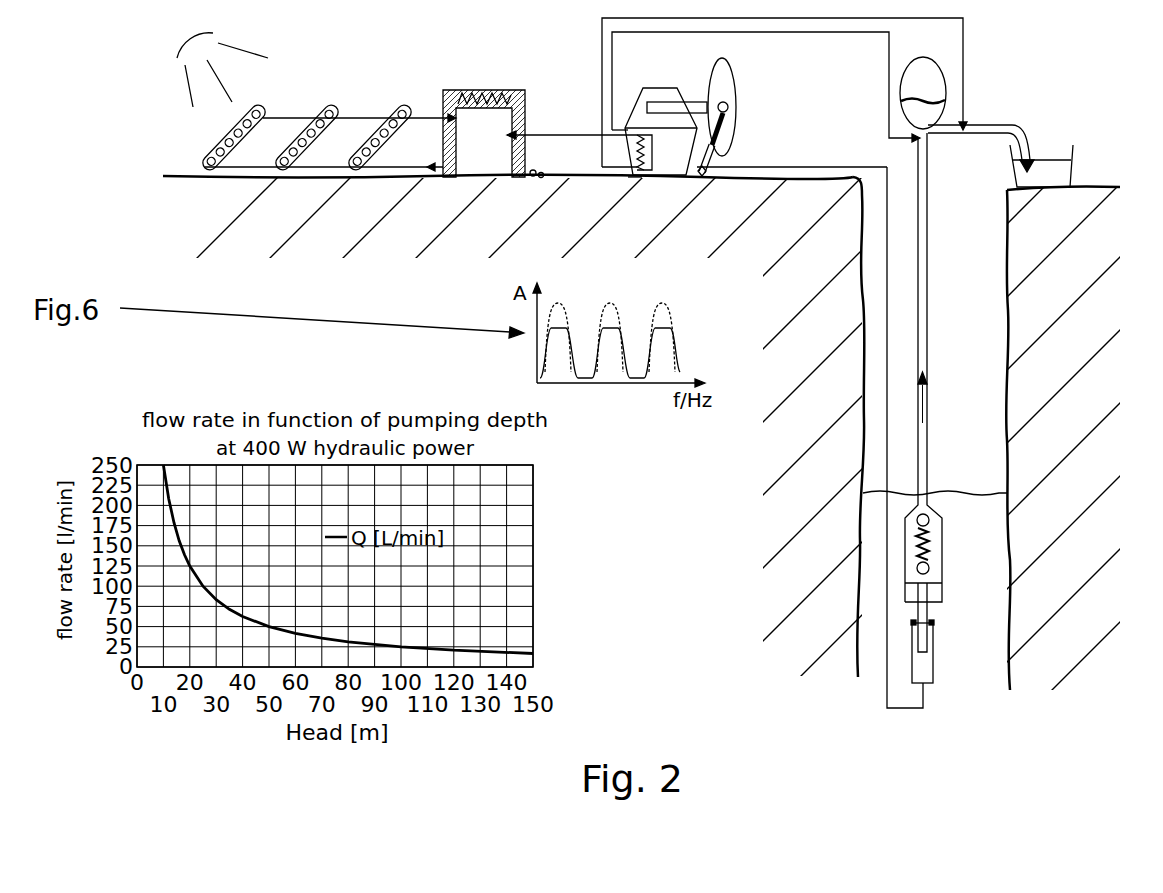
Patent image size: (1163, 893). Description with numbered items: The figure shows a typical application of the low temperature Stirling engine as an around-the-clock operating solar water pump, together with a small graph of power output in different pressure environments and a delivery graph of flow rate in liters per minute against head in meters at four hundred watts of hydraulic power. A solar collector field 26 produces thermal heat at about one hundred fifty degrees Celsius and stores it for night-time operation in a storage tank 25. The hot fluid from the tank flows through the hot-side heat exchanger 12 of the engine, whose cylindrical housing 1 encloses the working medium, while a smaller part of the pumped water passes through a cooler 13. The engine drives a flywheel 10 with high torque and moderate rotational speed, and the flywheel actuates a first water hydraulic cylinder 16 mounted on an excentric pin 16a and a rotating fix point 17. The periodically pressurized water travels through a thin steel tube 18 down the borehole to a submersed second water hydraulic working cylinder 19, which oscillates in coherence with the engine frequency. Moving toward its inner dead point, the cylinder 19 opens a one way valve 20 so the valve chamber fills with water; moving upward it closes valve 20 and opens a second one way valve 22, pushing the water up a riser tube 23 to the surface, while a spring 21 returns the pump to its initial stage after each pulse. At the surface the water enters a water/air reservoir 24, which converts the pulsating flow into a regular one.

The cylindrical housing 1 is at (660, 88).
The flywheel 10 is at (733, 79).
The hot-side heat exchanger 12 is at (652, 172).
The cooler 13 is at (637, 176).
The first water hydraulic cylinder 16 is at (727, 145).
The excentric pin 16a is at (728, 112).
The rotating fix point 17 is at (700, 178).
The thin steel tube 18 is at (830, 165).
The second water hydraulic working cylinder 19 is at (934, 638).
The one way valve 20 is at (942, 577).
The spring 21 is at (938, 545).
The one way valve 22 is at (942, 515).
The riser tube 23 is at (930, 300).
The water/air reservoir 24 is at (945, 80).
The storage tank 25 is at (472, 90).
The solar collector field 26 is at (403, 106).